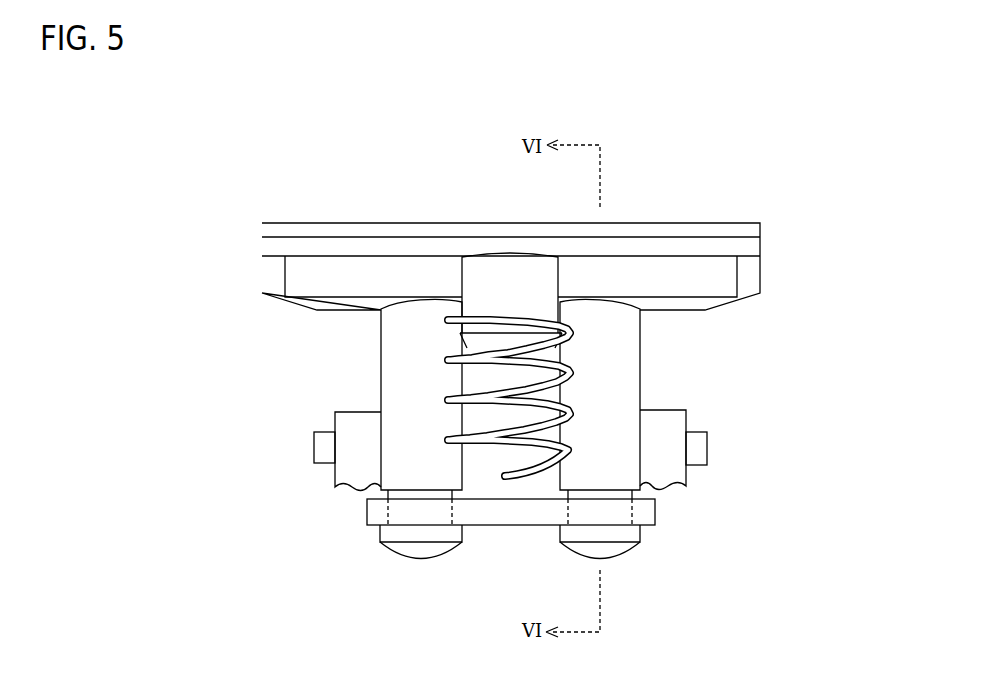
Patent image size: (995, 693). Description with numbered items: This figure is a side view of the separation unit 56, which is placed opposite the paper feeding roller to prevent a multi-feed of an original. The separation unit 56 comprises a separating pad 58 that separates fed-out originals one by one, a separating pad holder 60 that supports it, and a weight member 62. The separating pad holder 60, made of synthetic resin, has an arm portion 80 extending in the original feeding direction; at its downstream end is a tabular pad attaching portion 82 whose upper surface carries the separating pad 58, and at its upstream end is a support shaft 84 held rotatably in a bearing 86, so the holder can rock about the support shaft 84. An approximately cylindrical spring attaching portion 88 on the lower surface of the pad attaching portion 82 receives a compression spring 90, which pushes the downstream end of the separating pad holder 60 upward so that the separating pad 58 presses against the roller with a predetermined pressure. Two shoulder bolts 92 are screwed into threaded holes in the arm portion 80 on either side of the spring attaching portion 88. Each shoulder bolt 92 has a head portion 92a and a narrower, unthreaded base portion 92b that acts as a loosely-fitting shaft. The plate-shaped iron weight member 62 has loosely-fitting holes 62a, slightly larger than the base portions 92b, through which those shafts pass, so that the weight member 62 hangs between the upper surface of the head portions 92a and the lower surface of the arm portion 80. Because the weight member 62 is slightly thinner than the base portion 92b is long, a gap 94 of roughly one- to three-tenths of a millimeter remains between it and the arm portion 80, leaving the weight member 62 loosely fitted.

The separation unit 56 is at (280, 124).
The separating pad 58 is at (665, 229).
The separating pad holder 60 is at (655, 332).
The weight member 62 is at (493, 512).
The loosely-fitting hole 62a is at (647, 510).
The arm portion 80 is at (613, 384).
The pad attaching portion 82 is at (750, 248).
The support shaft 84 is at (325, 452).
The bearing 86 is at (362, 443).
The spring attaching portion 88 is at (486, 268).
The compression spring 90 is at (474, 393).
The shoulder bolt 92 is at (400, 558).
The head portion 92a is at (590, 537).
The base portion 92b is at (583, 509).
The gap 94 is at (374, 494).